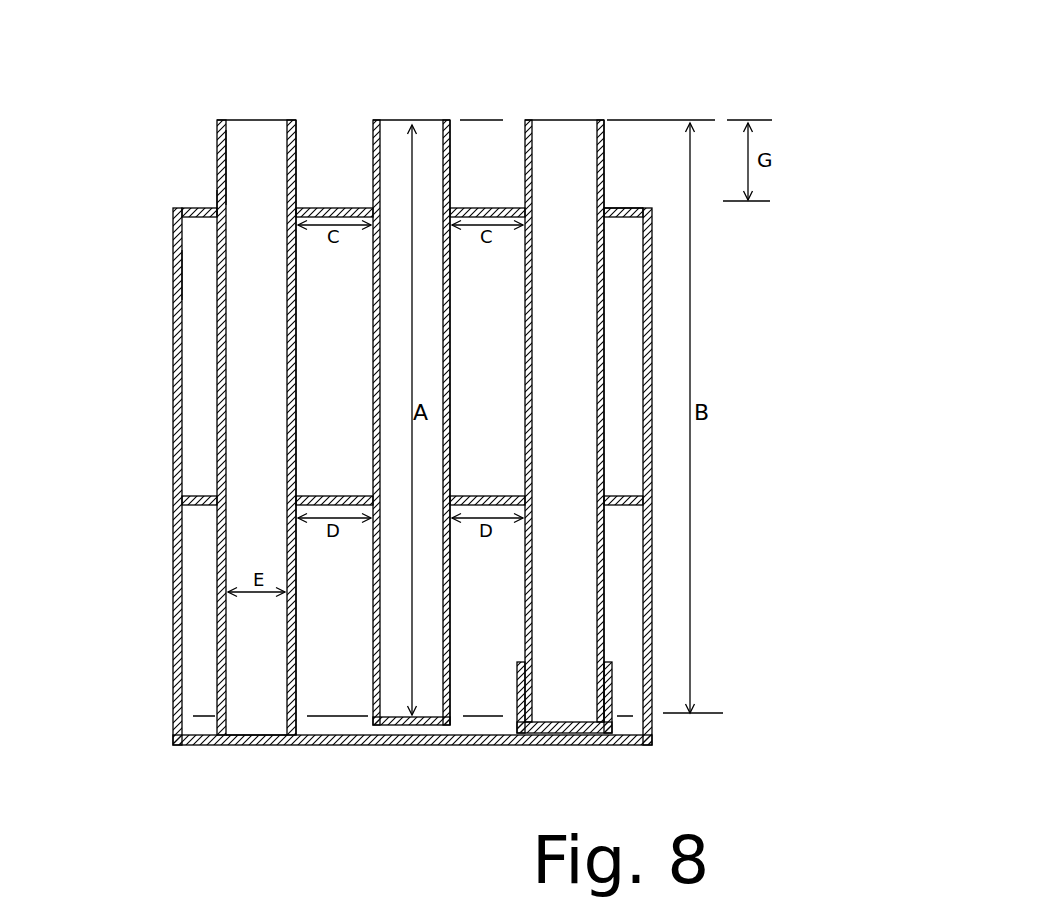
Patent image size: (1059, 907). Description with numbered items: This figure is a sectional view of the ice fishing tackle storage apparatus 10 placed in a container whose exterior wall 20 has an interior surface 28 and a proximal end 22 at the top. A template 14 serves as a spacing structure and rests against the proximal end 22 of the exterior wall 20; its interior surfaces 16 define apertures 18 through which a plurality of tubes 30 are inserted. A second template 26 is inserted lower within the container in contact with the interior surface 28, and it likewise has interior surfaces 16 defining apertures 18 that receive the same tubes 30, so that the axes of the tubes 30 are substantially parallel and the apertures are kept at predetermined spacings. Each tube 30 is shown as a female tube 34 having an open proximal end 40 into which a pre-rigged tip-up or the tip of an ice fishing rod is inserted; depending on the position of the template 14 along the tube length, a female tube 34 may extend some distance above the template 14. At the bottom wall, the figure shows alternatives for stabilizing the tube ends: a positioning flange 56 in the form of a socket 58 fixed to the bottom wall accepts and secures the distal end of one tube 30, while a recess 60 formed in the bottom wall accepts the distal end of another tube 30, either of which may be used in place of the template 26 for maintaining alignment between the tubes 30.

The apparatus 10 is at (790, 120).
The template 14 is at (185, 208).
The interior surfaces 16 is at (221, 207).
The apertures 18 is at (242, 202).
The exterior wall 20 is at (172, 352).
The proximal end 22 is at (648, 203).
The template 26 is at (197, 490).
The interior surface 28 is at (183, 277).
The tubes 30 is at (308, 110).
The female tube 34 is at (294, 147).
The proximal end 40 is at (217, 128).
The positioning flange 56 is at (498, 690).
The socket 58 is at (516, 694).
The recess 60 is at (280, 733).